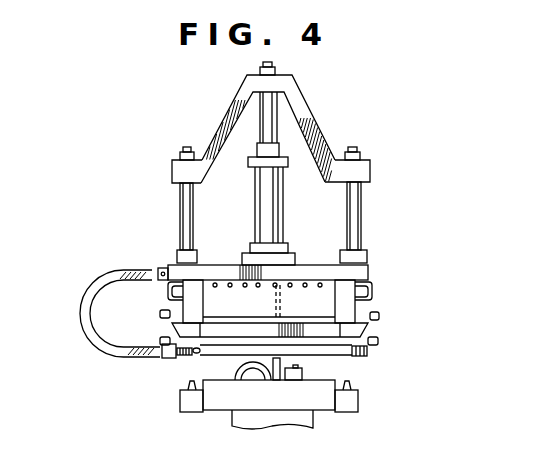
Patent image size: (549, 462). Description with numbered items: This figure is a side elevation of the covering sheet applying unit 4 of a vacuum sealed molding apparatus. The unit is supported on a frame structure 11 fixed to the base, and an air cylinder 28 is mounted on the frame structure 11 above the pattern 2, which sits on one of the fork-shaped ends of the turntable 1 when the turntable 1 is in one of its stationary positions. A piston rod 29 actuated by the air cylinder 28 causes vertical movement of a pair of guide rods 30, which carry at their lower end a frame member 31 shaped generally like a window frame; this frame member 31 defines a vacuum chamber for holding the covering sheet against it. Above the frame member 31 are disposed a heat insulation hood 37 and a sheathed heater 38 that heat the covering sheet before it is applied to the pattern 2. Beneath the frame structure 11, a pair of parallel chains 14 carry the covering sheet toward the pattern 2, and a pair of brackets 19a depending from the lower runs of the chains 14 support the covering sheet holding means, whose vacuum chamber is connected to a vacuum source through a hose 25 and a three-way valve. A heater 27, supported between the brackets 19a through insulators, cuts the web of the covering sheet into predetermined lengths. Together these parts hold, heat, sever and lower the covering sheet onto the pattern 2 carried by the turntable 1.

The turntable 1 is at (355, 403).
The pattern 2 is at (307, 373).
The covering sheet applying unit 4 is at (140, 216).
The frame structure 11 is at (370, 289).
The chains 14 is at (379, 316).
The brackets 19a is at (366, 350).
The hose 25 is at (86, 300).
The heater 27 is at (207, 357).
The air cylinder 28 is at (277, 205).
The piston rod 29 is at (277, 118).
The guide rods 30 is at (361, 212).
The frame member 31 is at (379, 341).
The heat insulation hood 37 is at (220, 300).
The sheathed heater 38 is at (302, 282).